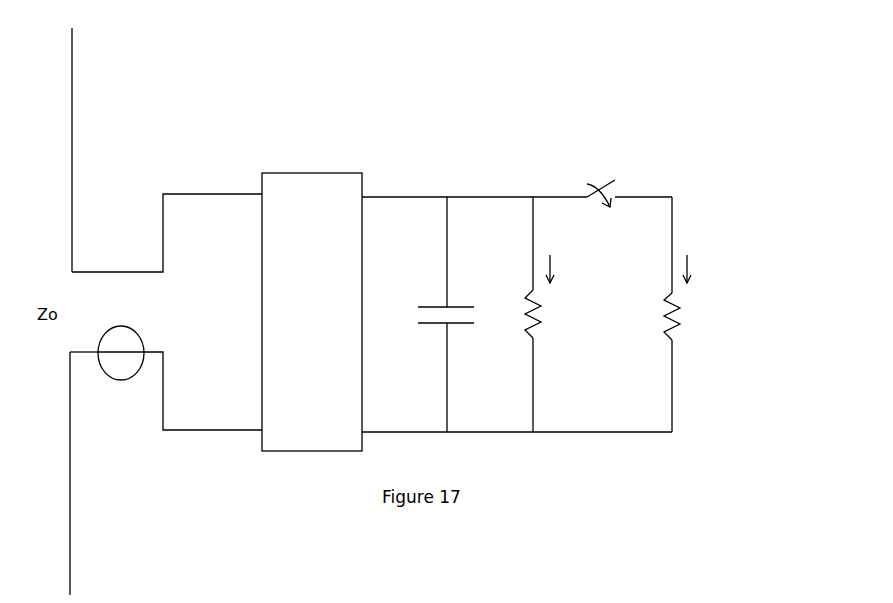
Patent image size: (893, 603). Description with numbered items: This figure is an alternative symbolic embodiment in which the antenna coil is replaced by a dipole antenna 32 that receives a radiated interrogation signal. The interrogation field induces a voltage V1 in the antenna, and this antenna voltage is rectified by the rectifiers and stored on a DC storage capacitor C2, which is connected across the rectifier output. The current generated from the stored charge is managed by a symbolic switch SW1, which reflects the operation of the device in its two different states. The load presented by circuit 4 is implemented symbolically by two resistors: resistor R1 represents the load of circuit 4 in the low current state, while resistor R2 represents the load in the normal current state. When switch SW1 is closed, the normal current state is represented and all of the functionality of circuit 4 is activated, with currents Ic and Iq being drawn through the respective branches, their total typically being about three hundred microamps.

The dipole antenna 32 is at (121, 311).
The circuit 4 is at (511, 266).
The voltage V1 is at (121, 372).
The DC storage capacitor C2 is at (461, 314).
The resistor R2 is at (570, 314).
The symbolic switch SW1 is at (606, 182).
The resistor R1 is at (686, 314).